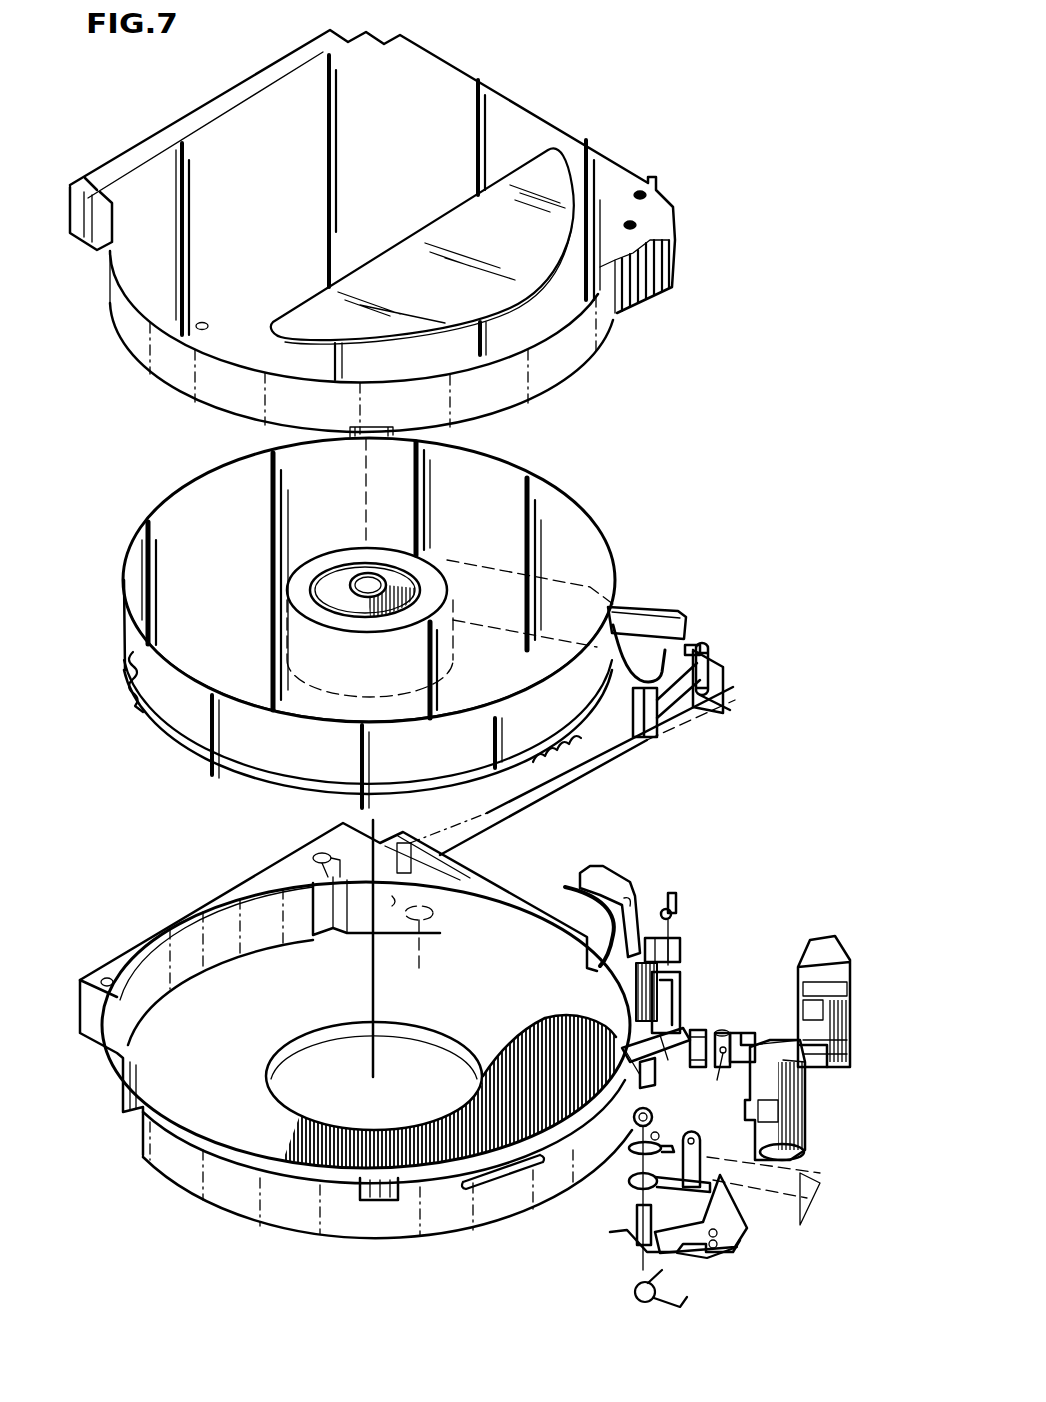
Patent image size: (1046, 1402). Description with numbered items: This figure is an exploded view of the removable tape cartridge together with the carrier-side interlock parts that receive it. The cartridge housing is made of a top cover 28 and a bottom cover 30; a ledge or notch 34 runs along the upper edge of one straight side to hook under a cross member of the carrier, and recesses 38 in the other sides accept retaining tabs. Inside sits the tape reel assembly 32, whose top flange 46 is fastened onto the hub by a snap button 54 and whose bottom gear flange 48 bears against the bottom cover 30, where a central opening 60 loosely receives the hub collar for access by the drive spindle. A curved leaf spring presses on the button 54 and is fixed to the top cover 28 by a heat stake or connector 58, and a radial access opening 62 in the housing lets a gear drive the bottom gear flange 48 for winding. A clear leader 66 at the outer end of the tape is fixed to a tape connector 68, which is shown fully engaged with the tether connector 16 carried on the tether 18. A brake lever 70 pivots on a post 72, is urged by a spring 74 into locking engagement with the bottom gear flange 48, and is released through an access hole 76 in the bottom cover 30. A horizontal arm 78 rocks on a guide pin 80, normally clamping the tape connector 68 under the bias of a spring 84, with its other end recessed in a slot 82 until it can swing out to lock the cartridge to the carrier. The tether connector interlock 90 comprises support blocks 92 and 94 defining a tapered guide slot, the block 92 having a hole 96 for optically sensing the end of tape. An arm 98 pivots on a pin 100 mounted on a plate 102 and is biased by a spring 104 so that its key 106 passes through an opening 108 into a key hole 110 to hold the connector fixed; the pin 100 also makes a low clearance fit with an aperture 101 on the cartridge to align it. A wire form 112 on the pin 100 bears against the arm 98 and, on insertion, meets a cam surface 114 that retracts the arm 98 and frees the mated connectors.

The connector 16 is at (728, 1034).
The tether 18 is at (748, 1041).
The top cover 28 is at (507, 120).
The bottom cover 30 is at (230, 1210).
The tape reel assembly 32 is at (560, 474).
The ledge or notch 34 is at (85, 186).
The recesses 38 is at (472, 1185).
The top flange 46 is at (485, 478).
The bottom gear flange 48 is at (133, 694).
The snap button 54 is at (343, 582).
The heat stake or connector 58 is at (196, 343).
The central opening 60 is at (295, 1050).
The radial access opening 62 is at (130, 1093).
The leader 66 is at (673, 612).
The tape connector 68 is at (702, 1028).
The brake lever 70 is at (730, 688).
The post 72 is at (698, 644).
The spring 74 is at (614, 626).
The access hole 76 is at (414, 948).
The horizontal arm 78 is at (607, 872).
The guide pin 80 is at (657, 983).
The slot 82 is at (573, 916).
The spring 84 is at (678, 890).
The tether connector interlock 90 is at (574, 1289).
The support block 92 is at (826, 952).
The support block 94 is at (810, 1150).
The hole 96 is at (852, 1022).
The arm 98 is at (723, 1195).
The pin 100 is at (612, 1233).
The aperture 101 is at (522, 1018).
The plate 102 is at (720, 1260).
The spring 104 is at (664, 1308).
The key 106 is at (700, 1147).
The opening 108 is at (808, 1126).
The key hole 110 is at (721, 1055).
The wire form 112 is at (632, 1155).
The cam surface 114 is at (652, 1110).